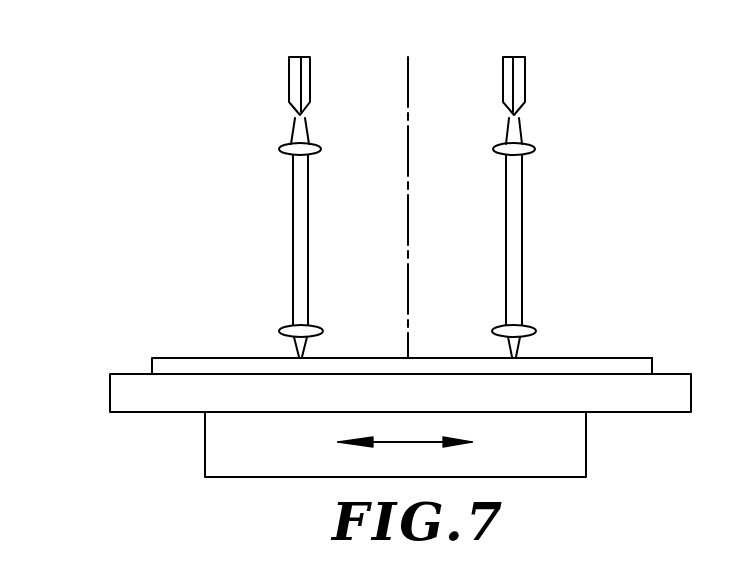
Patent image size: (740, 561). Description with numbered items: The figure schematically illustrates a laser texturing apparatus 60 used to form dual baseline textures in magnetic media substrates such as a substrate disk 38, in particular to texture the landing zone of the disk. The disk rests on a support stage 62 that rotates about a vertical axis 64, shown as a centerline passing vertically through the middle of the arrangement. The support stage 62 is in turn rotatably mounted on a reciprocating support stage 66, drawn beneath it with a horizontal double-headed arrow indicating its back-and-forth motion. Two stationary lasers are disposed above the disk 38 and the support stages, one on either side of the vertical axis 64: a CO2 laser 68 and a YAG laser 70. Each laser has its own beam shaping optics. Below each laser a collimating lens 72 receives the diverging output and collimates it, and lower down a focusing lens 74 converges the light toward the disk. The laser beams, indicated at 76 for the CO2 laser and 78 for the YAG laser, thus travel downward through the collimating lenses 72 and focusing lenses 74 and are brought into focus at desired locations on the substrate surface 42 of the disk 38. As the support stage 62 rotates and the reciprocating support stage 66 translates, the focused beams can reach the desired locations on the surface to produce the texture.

The substrate disk 38 is at (178, 365).
The substrate surface 42 is at (610, 357).
The laser texturing apparatus 60 is at (170, 198).
The support stage 62 is at (125, 398).
The vertical axis 64 is at (411, 80).
The reciprocating support stage 66 is at (228, 443).
The CO2 laser 68 is at (300, 85).
The YAG laser 70 is at (524, 82).
The collimating lenses 72 is at (282, 149).
The focusing lenses 74 is at (286, 328).
The laser beam 76 is at (293, 222).
The laser beam 78 is at (523, 222).